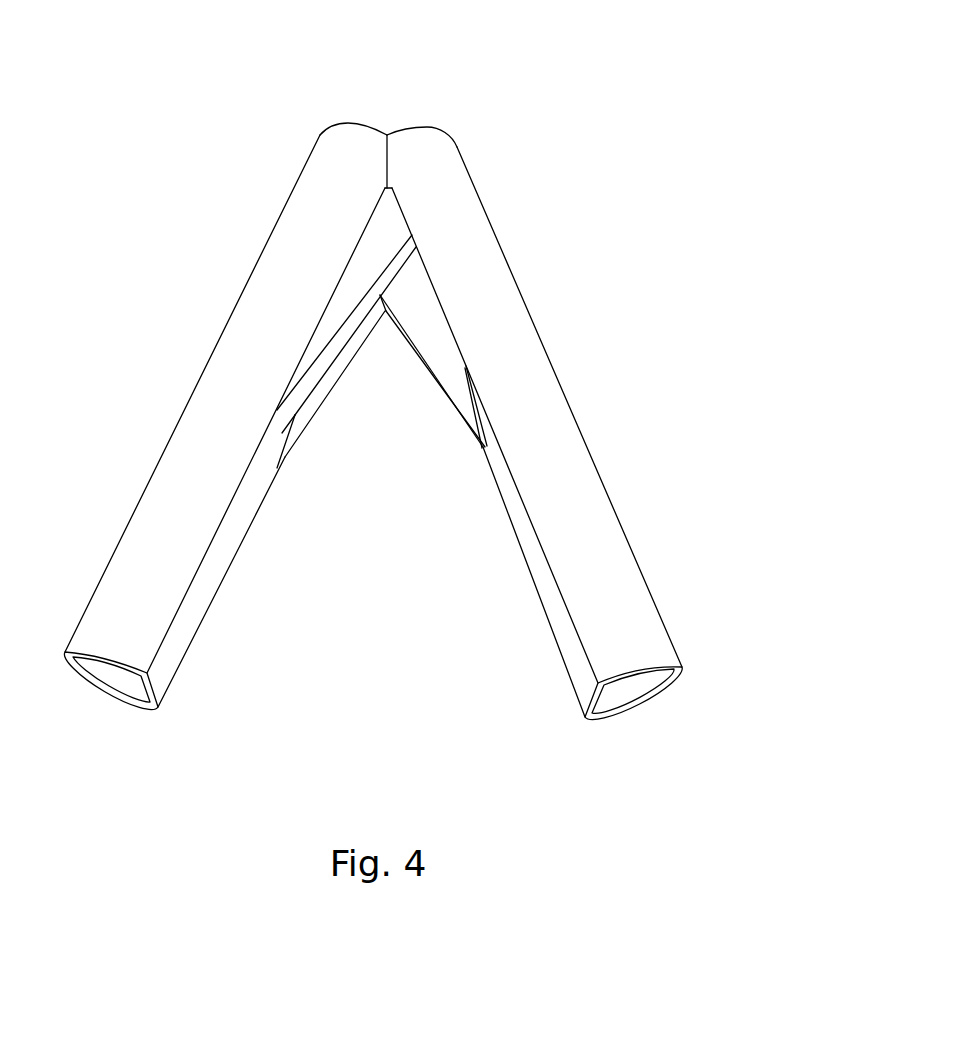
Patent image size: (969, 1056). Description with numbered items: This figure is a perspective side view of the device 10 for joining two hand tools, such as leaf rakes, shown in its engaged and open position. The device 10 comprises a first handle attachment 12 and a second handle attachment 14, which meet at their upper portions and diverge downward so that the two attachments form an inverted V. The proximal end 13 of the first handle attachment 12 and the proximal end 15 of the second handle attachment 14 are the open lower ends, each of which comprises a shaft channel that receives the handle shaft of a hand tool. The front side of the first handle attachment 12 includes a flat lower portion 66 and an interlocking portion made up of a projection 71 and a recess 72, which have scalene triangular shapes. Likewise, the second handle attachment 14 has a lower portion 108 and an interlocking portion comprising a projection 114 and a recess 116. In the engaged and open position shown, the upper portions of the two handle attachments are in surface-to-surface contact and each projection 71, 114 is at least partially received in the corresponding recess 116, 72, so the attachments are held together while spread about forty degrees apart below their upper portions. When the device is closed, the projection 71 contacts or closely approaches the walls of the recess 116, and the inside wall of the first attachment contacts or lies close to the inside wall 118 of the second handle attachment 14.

The device 10 is at (513, 78).
The first handle attachment 12 is at (246, 315).
The proximal end of first handle attachment 13 is at (147, 700).
The second handle attachment 14 is at (511, 293).
The proximal end of second handle attachment 15 is at (598, 713).
The lower portion 66 is at (198, 598).
The projection 71 is at (369, 248).
The recess 72 is at (338, 362).
The lower portion 108 is at (548, 595).
The projection 114 is at (423, 362).
The recess 116 is at (475, 401).
The inside wall 118 is at (426, 320).